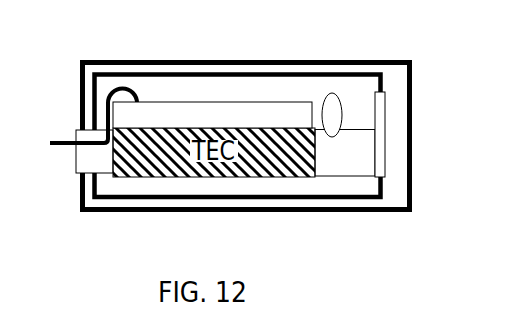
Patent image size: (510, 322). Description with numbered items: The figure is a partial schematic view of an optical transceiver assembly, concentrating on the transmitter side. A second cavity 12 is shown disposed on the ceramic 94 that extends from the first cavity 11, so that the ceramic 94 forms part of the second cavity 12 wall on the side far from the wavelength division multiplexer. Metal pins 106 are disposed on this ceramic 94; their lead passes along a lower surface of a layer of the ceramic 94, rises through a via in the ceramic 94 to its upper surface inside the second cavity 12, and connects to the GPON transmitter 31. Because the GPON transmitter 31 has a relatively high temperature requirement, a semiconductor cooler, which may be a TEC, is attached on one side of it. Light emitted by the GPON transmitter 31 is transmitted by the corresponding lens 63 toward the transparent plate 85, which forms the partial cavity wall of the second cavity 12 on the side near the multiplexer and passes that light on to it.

The first cavity 11 is at (192, 61).
The second cavity 12 is at (178, 199).
The GPON transmitter 31 is at (270, 103).
The lens 63 is at (338, 109).
The transparent plate 85 is at (378, 176).
The ceramic 94 is at (78, 130).
The metal pins 106 is at (62, 145).